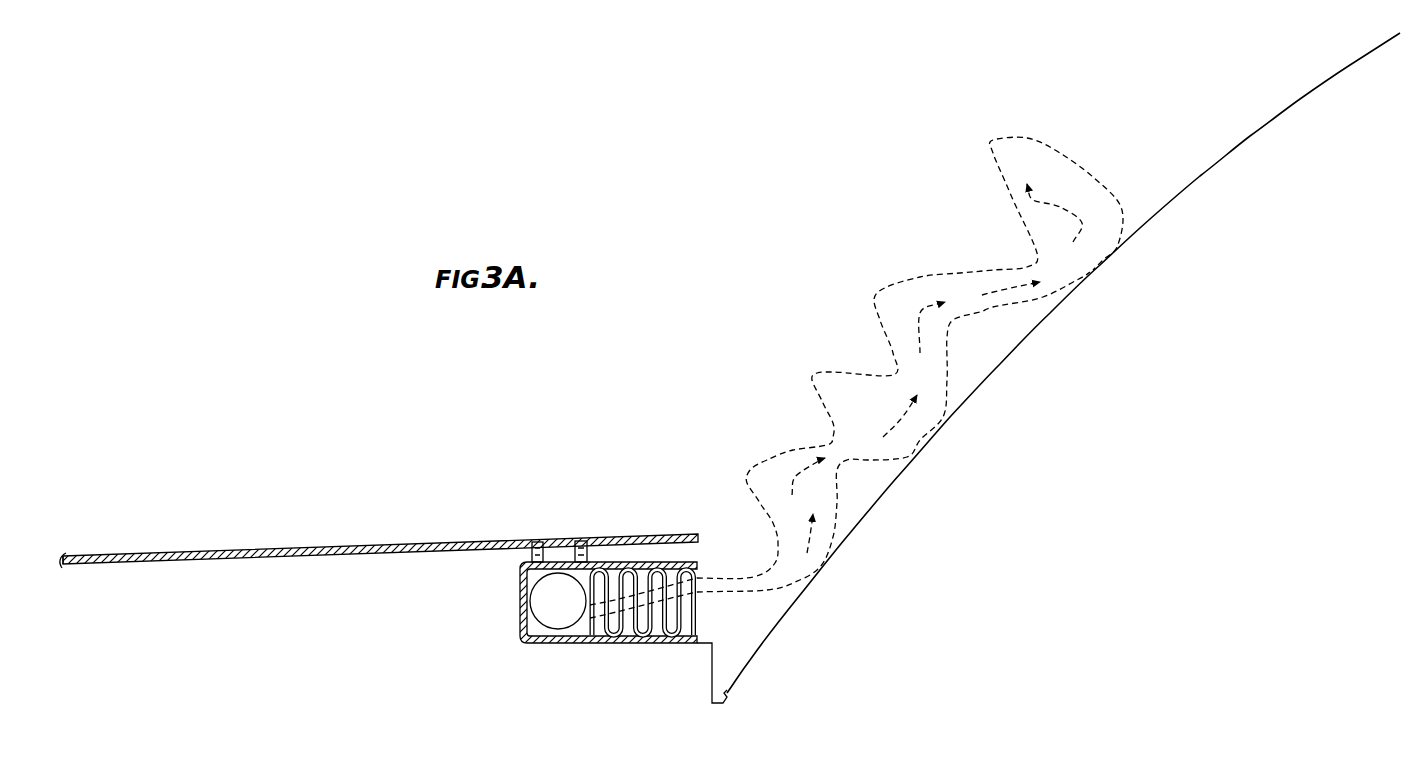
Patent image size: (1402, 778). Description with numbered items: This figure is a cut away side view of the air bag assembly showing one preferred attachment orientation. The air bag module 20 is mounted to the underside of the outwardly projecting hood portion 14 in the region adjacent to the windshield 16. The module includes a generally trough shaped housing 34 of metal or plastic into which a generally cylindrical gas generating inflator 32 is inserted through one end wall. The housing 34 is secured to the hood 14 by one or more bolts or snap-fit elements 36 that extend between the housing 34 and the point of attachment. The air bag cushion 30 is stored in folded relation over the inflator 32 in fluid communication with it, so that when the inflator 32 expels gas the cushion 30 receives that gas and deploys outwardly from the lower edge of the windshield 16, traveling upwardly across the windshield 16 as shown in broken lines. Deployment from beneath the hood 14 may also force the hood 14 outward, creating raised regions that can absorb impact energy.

The hood portion 14 is at (482, 540).
The windshield 16 is at (1217, 163).
The air bag module 20 is at (789, 401).
The air bag cushion 30 is at (697, 616).
The gas generating inflator 32 is at (558, 617).
The housing 34 is at (520, 617).
The snap-fit elements 36 is at (543, 552).